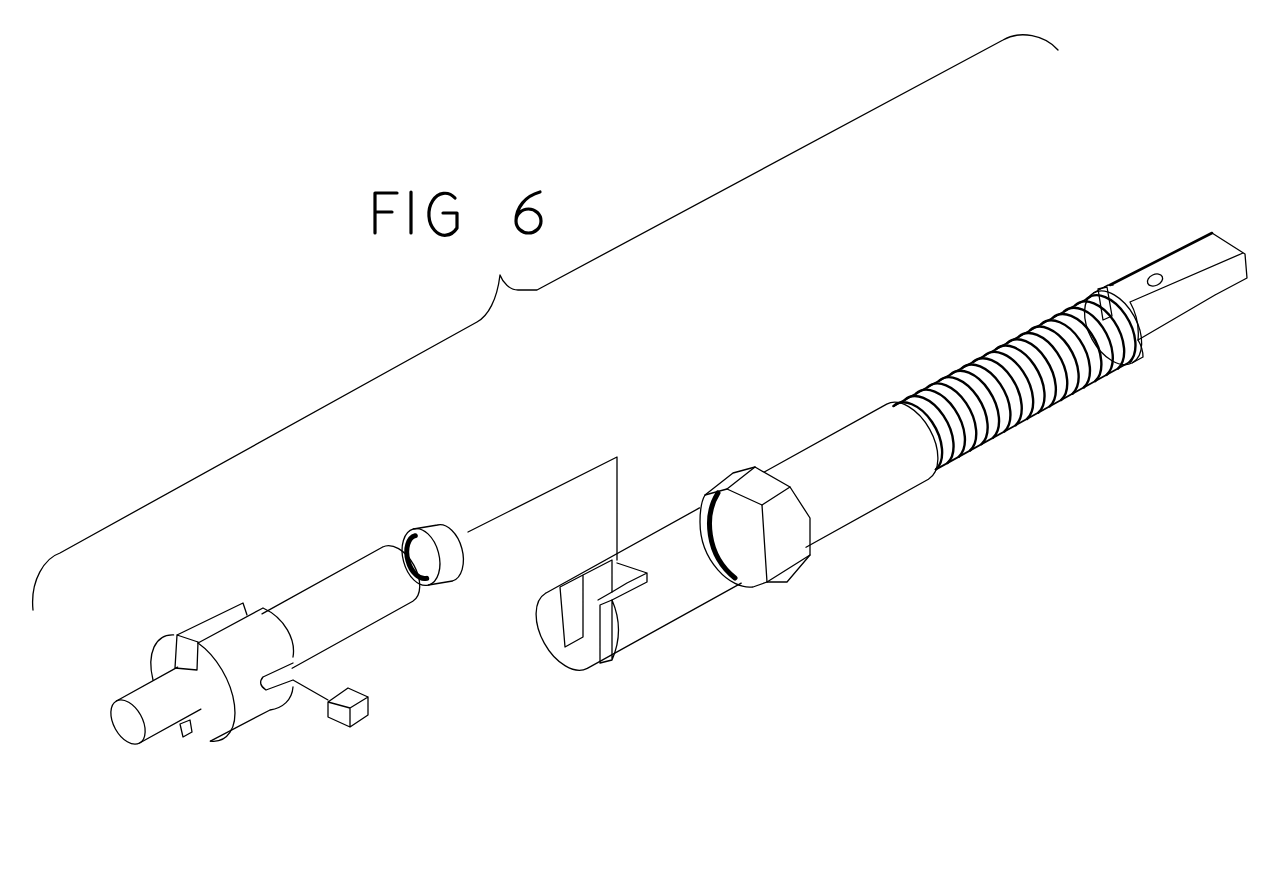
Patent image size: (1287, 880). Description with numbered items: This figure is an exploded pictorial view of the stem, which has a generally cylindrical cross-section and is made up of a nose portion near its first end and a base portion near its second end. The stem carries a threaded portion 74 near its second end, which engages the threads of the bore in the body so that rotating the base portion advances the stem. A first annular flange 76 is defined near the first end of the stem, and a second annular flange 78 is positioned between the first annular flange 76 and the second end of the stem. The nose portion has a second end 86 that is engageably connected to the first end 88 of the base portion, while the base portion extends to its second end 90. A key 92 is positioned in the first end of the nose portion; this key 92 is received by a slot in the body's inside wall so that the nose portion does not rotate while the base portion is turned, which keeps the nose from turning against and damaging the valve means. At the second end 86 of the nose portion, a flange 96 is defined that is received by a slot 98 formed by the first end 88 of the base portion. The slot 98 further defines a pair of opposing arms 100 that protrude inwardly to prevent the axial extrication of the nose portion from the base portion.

The threaded portion 74 is at (1027, 327).
The first annular flange 76 is at (138, 685).
The second annular flange 78 is at (800, 565).
The second end of the nose portion 86 is at (357, 557).
The first end of the base portion 88 is at (687, 515).
The second end of the base portion 90 is at (1215, 295).
The key 92 is at (360, 725).
The flange 96 is at (447, 528).
The slot 98 is at (617, 548).
The pair of opposing arms 100 is at (550, 617).